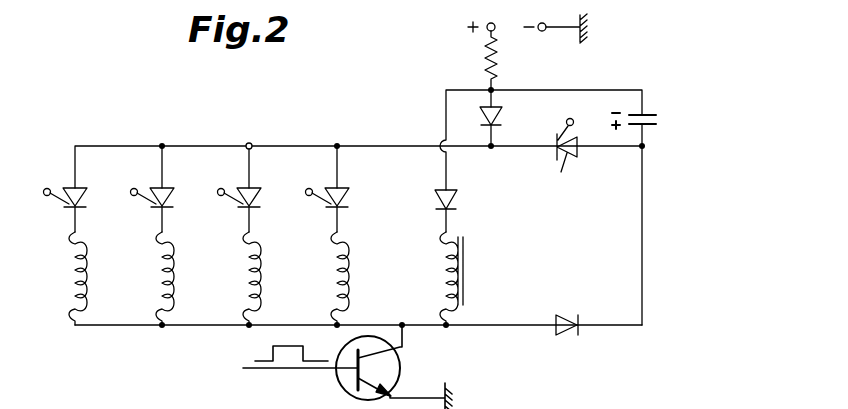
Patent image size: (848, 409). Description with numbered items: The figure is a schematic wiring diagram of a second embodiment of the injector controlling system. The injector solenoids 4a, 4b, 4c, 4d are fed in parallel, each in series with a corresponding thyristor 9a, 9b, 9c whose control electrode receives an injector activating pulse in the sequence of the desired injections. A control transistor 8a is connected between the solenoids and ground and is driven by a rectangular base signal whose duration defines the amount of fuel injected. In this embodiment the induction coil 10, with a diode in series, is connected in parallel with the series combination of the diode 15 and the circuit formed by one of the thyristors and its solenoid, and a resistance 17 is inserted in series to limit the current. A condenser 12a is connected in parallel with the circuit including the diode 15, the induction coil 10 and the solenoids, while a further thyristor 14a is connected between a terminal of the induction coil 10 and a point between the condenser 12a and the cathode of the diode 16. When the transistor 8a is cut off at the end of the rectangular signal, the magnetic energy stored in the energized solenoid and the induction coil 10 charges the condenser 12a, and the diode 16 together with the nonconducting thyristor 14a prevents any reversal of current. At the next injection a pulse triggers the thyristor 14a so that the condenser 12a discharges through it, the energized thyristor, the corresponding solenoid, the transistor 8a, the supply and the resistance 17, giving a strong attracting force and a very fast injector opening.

The solenoid 4a is at (64, 280).
The solenoid 4b is at (152, 279).
The solenoid 4c is at (238, 279).
The solenoid 4d is at (326, 279).
The thyristor 9a is at (89, 198).
The thyristor 9b is at (176, 198).
The thyristor 9c is at (263, 198).
The induction coil 10 is at (437, 271).
The diode 15 is at (503, 118).
The resistance 17 is at (484, 60).
The condenser 12a is at (658, 123).
The thyristor 14a is at (578, 160).
The diode 16 is at (573, 315).
The control transistor 8a is at (401, 368).